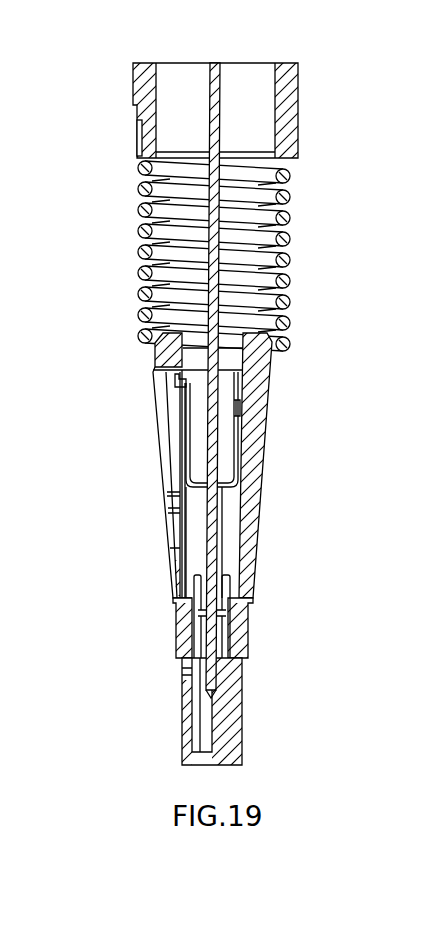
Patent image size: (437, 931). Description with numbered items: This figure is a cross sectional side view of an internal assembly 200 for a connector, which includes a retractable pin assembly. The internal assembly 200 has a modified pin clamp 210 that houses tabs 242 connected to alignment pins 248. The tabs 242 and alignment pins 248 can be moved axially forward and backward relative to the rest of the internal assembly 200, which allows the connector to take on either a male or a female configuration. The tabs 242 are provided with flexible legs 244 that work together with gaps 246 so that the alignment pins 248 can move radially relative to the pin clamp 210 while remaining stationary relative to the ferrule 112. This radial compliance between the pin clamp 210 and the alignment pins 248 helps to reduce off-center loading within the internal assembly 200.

The internal assembly 200 is at (322, 199).
The pin clamp 210 is at (250, 517).
The tabs 242 is at (167, 410).
The flexible legs 244 is at (167, 392).
The gaps 246 is at (180, 482).
The alignment pins 248 is at (222, 545).
The ferrule 112 is at (230, 732).